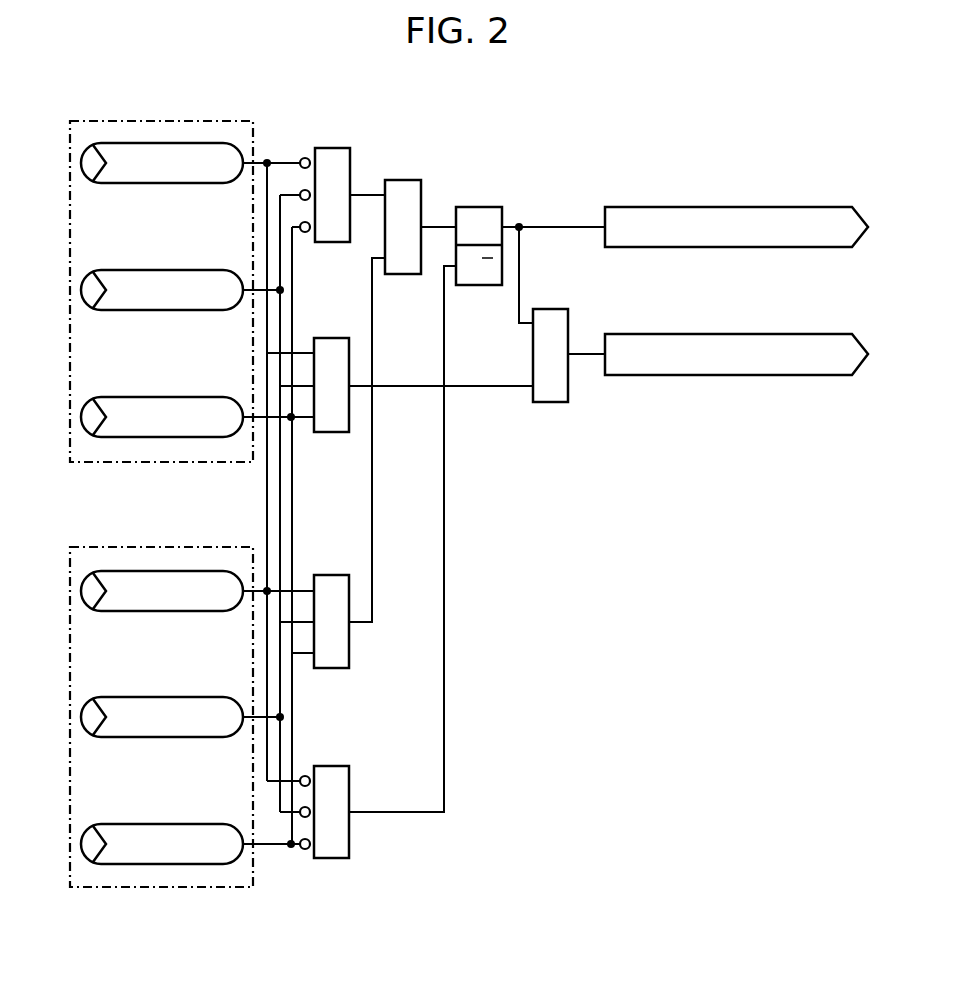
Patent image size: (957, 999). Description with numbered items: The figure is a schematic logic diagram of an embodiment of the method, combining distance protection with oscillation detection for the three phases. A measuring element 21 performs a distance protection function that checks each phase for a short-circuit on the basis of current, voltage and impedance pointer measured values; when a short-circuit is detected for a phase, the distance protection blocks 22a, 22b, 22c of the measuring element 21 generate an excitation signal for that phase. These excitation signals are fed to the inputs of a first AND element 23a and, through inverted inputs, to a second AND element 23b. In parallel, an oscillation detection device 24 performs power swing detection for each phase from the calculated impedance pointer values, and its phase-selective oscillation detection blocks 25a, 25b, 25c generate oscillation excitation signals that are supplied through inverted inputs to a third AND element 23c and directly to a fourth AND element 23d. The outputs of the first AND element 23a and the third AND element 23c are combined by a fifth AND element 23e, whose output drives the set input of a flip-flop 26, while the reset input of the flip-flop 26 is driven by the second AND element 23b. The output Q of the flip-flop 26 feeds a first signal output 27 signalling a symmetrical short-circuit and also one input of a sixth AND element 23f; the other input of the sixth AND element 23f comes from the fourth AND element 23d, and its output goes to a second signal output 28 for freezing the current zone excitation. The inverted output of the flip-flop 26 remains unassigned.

The measuring element 21 is at (167, 887).
The distance protection block 22a is at (128, 611).
The distance protection block 22b is at (128, 737).
The distance protection block 22c is at (193, 824).
The first AND element 23a is at (349, 653).
The second AND element 23b is at (349, 840).
The third AND element 23c is at (333, 148).
The fourth AND element 23d is at (333, 432).
The fifth AND element 23e is at (404, 180).
The sixth AND element 23f is at (552, 402).
The oscillation detection device 24 is at (167, 121).
The oscillation detection block 25a is at (128, 183).
The oscillation detection block 25b is at (128, 310).
The oscillation detection block 25c is at (193, 397).
The flip-flop 26 is at (479, 207).
The first signal output 27 is at (733, 207).
The second signal output 28 is at (732, 375).